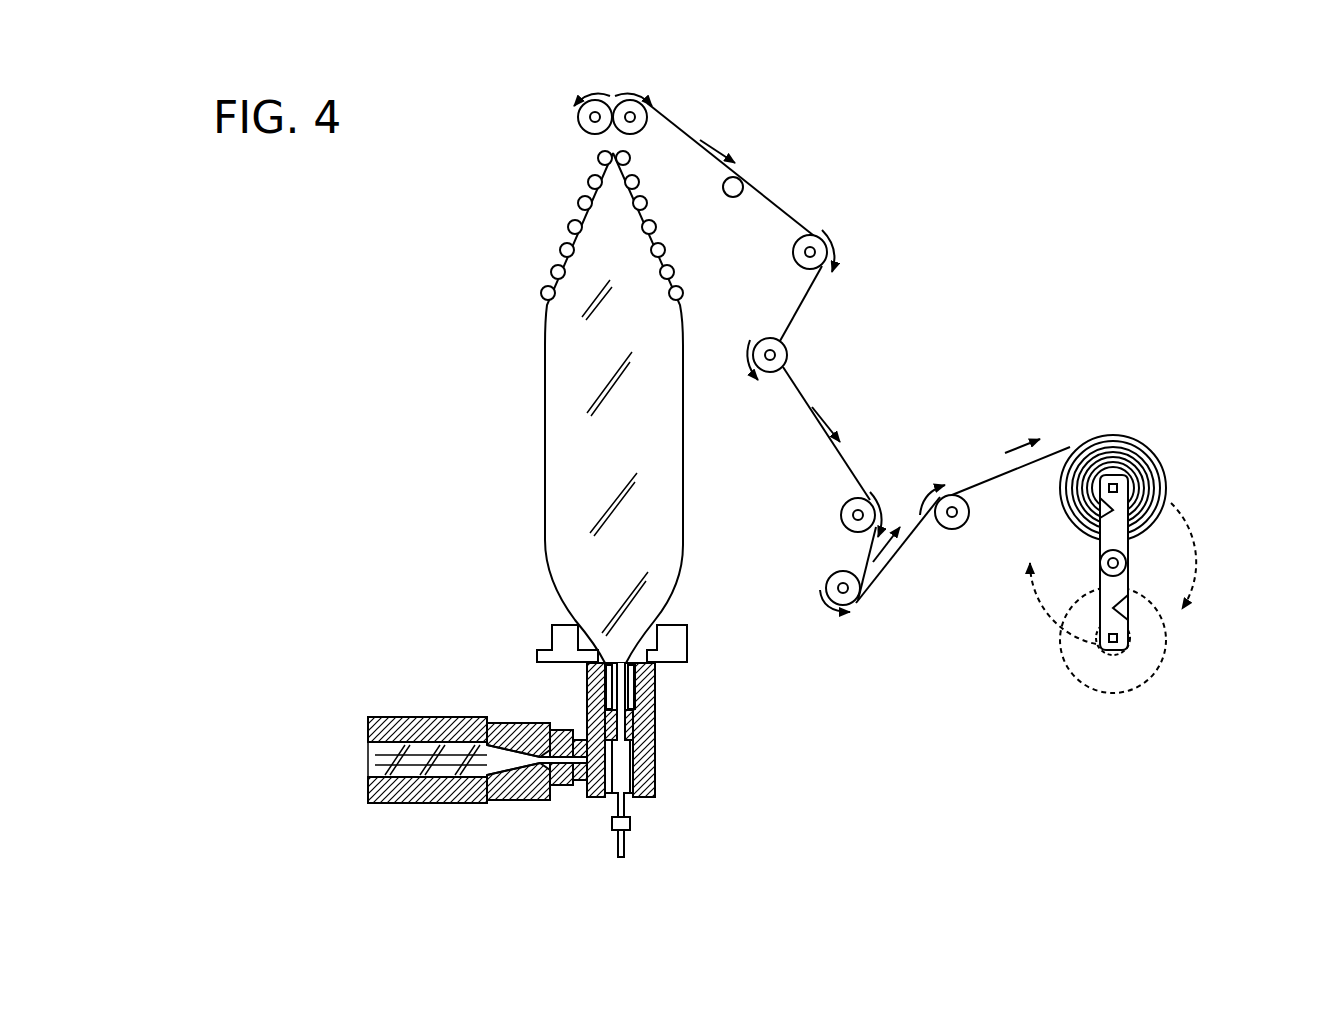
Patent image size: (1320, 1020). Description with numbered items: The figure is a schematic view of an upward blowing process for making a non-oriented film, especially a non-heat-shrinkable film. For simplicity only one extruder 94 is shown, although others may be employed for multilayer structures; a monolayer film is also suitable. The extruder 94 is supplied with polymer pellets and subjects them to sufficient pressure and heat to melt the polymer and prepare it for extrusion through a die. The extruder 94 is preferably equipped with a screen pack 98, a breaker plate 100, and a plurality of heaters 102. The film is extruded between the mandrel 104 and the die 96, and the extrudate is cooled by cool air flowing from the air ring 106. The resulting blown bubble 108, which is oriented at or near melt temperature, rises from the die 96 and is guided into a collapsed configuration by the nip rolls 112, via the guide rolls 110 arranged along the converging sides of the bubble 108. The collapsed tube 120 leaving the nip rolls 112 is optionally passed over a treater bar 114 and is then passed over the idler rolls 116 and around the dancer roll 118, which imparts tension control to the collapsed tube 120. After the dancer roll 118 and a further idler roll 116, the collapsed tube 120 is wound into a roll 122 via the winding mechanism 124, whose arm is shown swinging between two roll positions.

The extruder 94 is at (405, 712).
The die 96 is at (660, 670).
The screen pack 98 is at (500, 748).
The breaker plate 100 is at (500, 770).
The heaters 102 is at (450, 805).
The mandrel 104 is at (626, 662).
The air ring 106 is at (548, 640).
The film bubble 108 is at (545, 400).
The guide rolls 110 is at (578, 182).
The nip rolls 112 is at (625, 86).
The treater bar 114 is at (724, 197).
The idler rolls 116 is at (793, 270).
The dancer roll 118 is at (863, 582).
The collapsed tube 120 is at (610, 142).
The roll 122 is at (1163, 450).
The winding mechanism 124 is at (1100, 565).